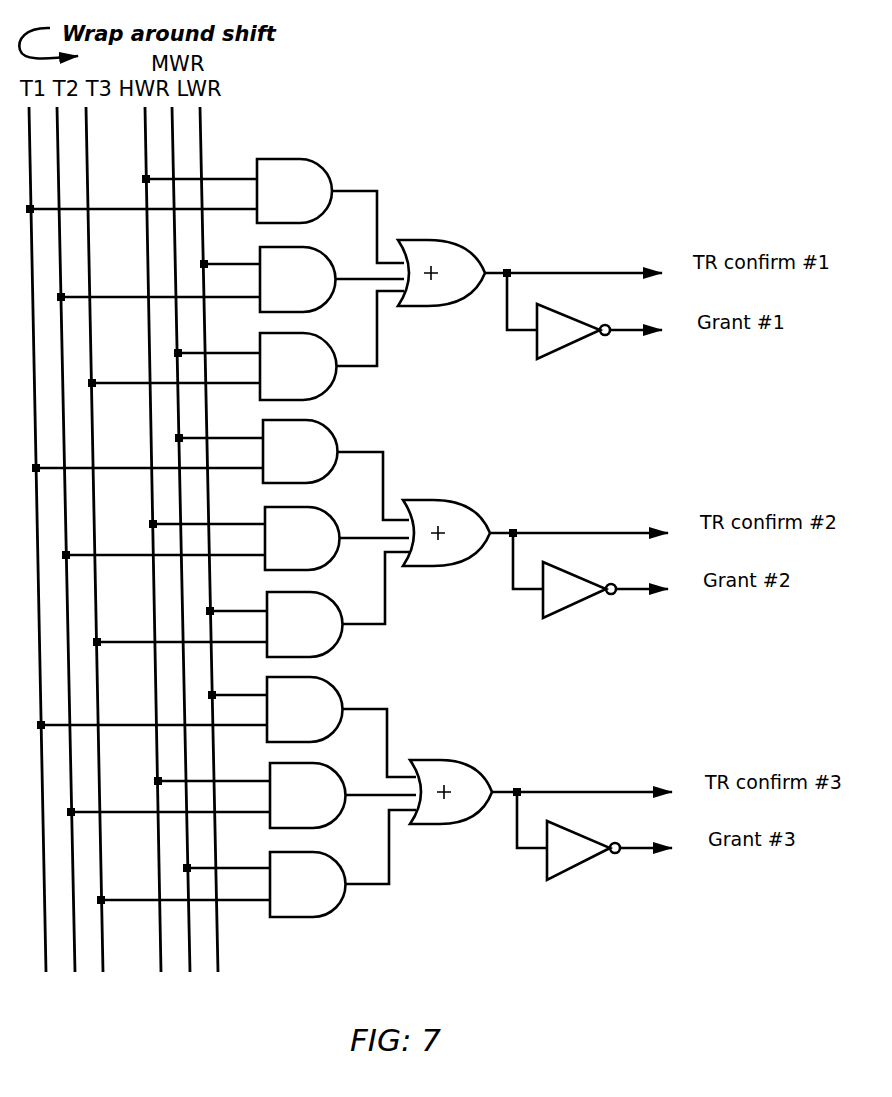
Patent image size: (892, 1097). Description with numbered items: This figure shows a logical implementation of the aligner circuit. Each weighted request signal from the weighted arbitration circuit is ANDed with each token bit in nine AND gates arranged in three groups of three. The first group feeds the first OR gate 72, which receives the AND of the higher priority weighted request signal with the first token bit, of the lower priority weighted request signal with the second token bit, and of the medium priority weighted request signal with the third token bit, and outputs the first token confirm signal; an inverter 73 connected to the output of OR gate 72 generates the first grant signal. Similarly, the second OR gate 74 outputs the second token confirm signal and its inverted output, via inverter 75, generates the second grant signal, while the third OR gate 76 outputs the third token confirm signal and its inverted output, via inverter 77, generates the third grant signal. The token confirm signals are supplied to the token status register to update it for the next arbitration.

The OR gate 72 is at (455, 243).
The inverter 73 is at (568, 342).
The OR gate 74 is at (468, 515).
The inverter 75 is at (573, 601).
The OR gate 76 is at (464, 770).
The inverter 77 is at (578, 861).